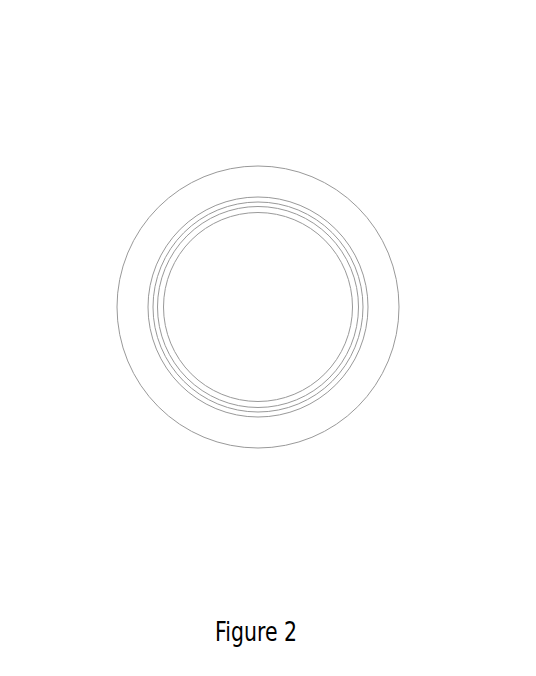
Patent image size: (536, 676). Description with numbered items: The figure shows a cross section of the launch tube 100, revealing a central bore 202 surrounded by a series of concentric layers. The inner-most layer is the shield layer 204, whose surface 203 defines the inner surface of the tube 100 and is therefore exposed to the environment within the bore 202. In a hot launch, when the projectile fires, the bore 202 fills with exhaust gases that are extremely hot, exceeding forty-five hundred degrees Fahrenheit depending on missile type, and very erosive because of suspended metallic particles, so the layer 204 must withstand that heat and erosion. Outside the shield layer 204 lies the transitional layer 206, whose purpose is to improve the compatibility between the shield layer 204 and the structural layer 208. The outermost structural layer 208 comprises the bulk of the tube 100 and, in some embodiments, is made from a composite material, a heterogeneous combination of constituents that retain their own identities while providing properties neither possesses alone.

The launch tube 100 is at (131, 110).
The bore 202 is at (338, 343).
The surface 203 is at (258, 307).
The layer 204 is at (319, 307).
The transitional layer 206 is at (316, 307).
The structural layer 208 is at (313, 303).